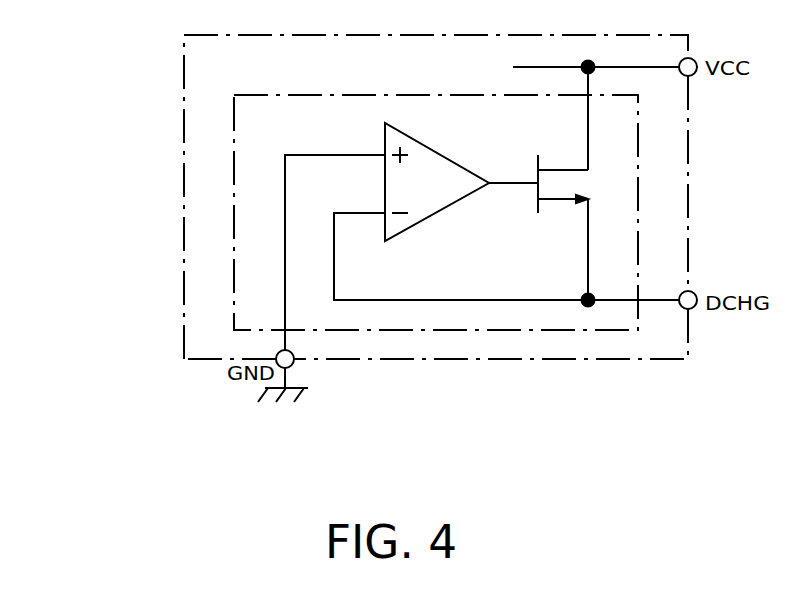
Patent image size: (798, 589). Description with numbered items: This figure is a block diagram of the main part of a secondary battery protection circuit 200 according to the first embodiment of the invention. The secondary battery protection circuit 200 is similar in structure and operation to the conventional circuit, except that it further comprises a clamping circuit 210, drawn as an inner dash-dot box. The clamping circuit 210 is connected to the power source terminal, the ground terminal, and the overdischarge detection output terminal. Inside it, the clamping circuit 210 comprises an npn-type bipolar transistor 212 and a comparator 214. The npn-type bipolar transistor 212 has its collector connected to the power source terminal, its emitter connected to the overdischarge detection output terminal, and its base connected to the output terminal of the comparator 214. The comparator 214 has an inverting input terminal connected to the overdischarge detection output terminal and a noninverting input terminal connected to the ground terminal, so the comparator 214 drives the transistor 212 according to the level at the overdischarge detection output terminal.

The secondary battery protection circuit 200 is at (184, 170).
The clamping circuit 210 is at (350, 330).
The npn-type bipolar transistor 212 is at (552, 202).
The comparator 214 is at (438, 213).